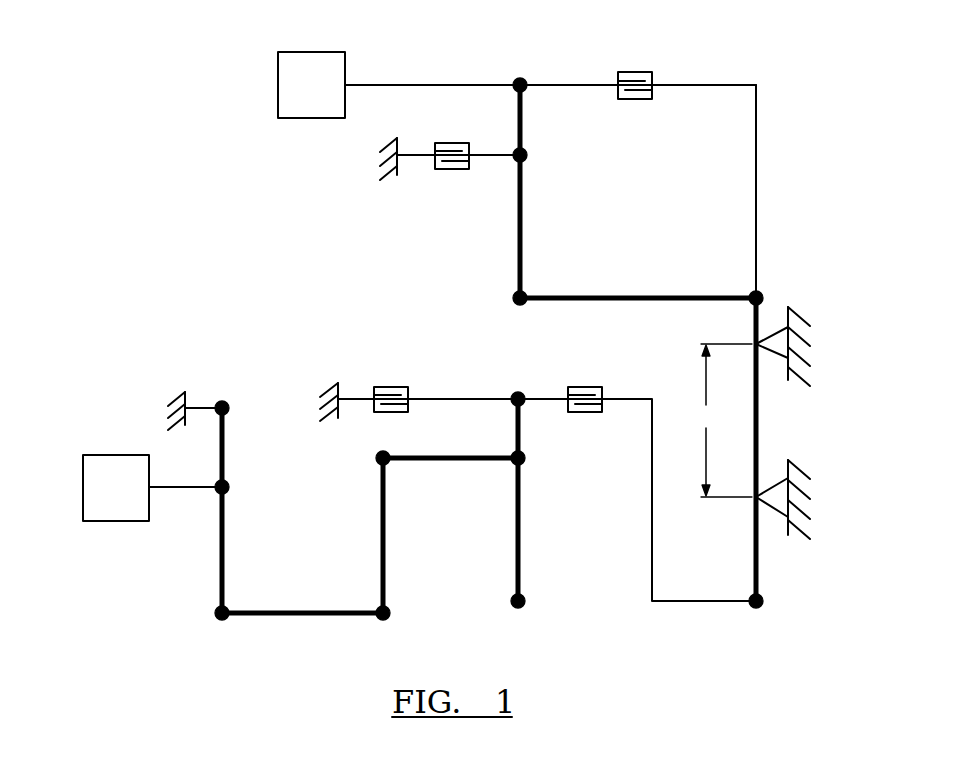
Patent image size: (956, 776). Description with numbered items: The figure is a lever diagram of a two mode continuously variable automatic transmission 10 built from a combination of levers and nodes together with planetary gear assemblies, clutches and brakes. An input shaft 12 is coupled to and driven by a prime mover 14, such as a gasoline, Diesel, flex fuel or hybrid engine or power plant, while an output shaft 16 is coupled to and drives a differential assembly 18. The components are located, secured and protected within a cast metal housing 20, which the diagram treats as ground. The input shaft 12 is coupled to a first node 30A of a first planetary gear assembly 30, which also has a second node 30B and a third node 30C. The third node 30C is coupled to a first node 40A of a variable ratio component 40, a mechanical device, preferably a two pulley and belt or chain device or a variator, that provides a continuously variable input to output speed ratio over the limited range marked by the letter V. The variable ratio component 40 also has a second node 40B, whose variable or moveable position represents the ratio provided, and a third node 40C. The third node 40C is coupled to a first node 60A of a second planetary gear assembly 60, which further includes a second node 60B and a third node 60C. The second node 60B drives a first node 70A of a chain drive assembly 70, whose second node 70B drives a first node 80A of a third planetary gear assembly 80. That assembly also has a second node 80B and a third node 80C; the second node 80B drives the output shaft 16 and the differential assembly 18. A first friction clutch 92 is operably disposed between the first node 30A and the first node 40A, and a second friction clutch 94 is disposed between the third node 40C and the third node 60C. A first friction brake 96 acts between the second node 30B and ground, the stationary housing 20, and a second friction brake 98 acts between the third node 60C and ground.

The automatic transmission 10 is at (143, 96).
The input shaft 12 is at (399, 82).
The prime mover 14 is at (303, 80).
The output shaft 16 is at (185, 492).
The differential assembly 18 is at (110, 480).
The housing 20 is at (392, 172).
The first planetary gear assembly 30 is at (556, 208).
The first node of the first planetary gear assembly 30A is at (522, 78).
The second node of the first planetary gear assembly 30B is at (527, 154).
The third node of the first planetary gear assembly 30C is at (514, 299).
The variable ratio component 40 is at (779, 267).
The first node of the variable ratio component 40A is at (764, 297).
The second node of the variable ratio component 40B is at (752, 500).
The third node of the variable ratio component 40C is at (765, 600).
The second planetary gear assembly 60 is at (500, 562).
The first node of the second planetary gear assembly 60A is at (520, 608).
The second node of the second planetary gear assembly 60B is at (525, 461).
The third node of the second planetary gear assembly 60C is at (520, 392).
The chain drive assembly 70 is at (402, 562).
The first node of the chain drive assembly 70A is at (376, 461).
The second node of the chain drive assembly 70B is at (382, 621).
The third planetary gear assembly 80 is at (238, 450).
The first node of the third planetary gear assembly 80A is at (222, 621).
The second node of the third planetary gear assembly 80B is at (229, 490).
The third node of the third planetary gear assembly 80C is at (222, 400).
The first friction clutch 92 is at (632, 71).
The second friction clutch 94 is at (589, 386).
The first friction brake 96 is at (457, 172).
The second friction brake 98 is at (390, 386).